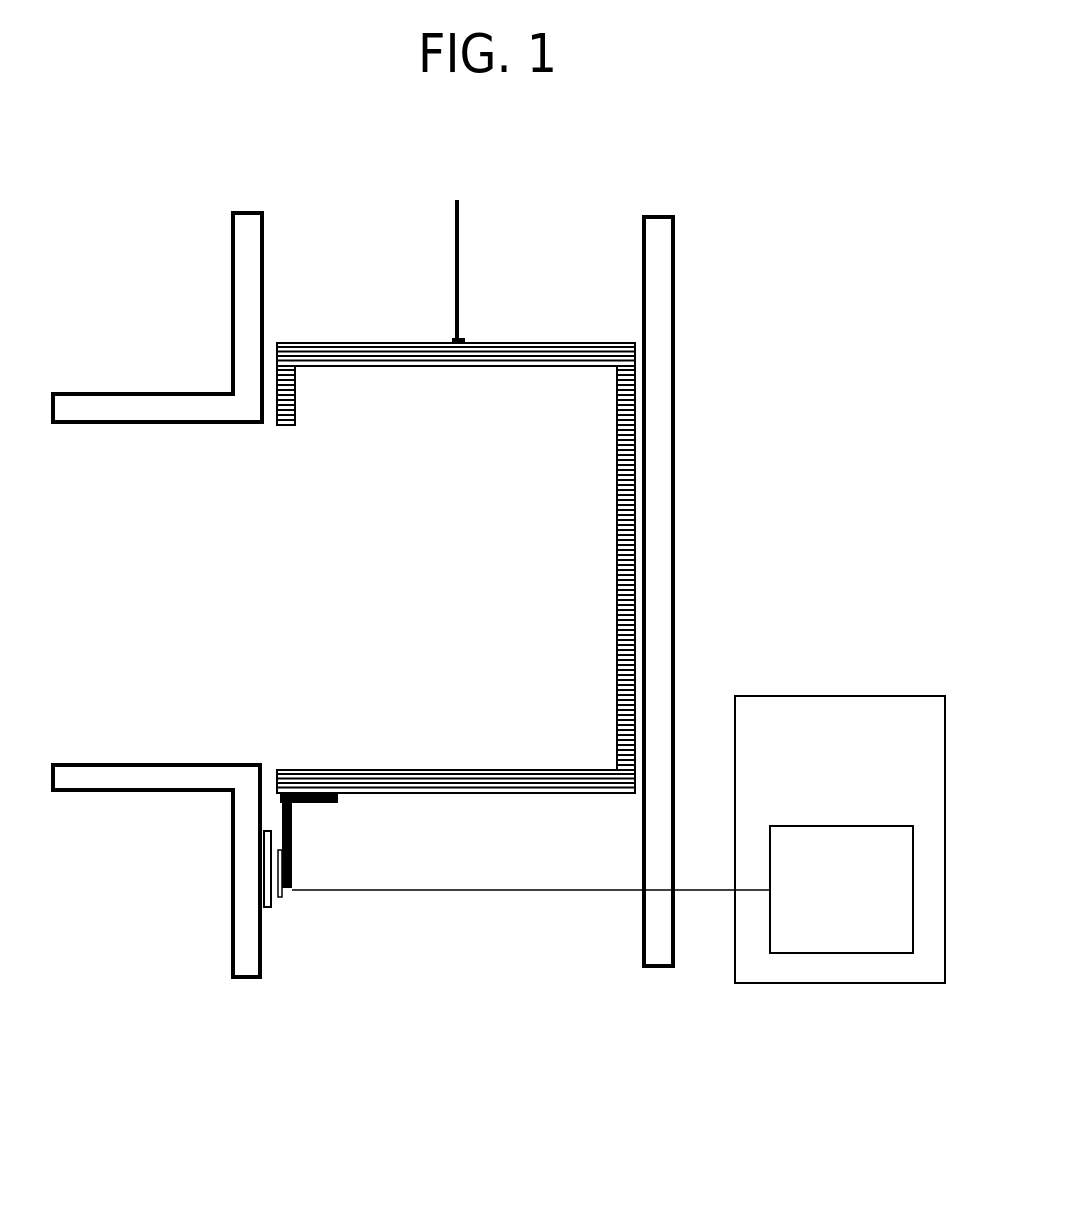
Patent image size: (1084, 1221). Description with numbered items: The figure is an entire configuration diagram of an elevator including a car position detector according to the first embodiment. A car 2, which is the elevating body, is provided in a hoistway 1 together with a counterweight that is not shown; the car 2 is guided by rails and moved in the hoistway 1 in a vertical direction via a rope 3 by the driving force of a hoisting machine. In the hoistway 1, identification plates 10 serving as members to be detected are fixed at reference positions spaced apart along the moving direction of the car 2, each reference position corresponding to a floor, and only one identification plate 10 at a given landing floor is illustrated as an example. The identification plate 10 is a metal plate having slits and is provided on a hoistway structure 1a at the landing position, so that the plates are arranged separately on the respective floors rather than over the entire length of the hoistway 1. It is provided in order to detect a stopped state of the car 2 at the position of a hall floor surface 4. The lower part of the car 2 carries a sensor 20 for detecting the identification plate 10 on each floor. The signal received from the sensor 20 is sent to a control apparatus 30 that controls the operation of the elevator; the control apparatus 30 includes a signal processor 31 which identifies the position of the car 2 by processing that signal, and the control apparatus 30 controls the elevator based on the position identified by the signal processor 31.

The hoistway 1 is at (328, 265).
The hoistway structure 1a is at (242, 885).
The car 2 is at (512, 345).
The rope 3 is at (458, 252).
The hall floor surface 4 is at (153, 765).
The identification plate 10 is at (267, 908).
The sensor 20 is at (278, 902).
The control apparatus 30 is at (853, 696).
The signal processor 31 is at (833, 826).